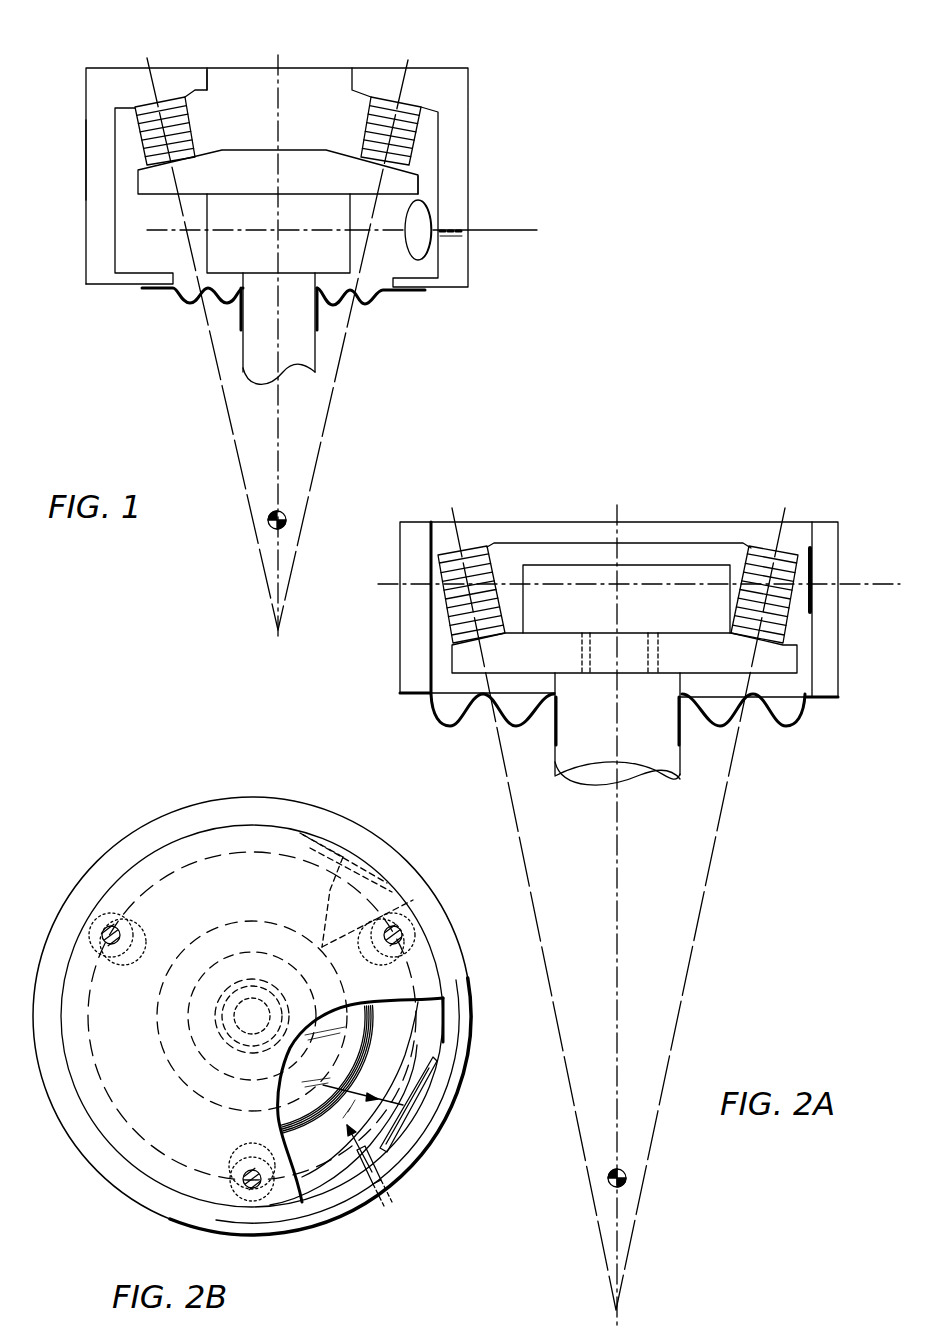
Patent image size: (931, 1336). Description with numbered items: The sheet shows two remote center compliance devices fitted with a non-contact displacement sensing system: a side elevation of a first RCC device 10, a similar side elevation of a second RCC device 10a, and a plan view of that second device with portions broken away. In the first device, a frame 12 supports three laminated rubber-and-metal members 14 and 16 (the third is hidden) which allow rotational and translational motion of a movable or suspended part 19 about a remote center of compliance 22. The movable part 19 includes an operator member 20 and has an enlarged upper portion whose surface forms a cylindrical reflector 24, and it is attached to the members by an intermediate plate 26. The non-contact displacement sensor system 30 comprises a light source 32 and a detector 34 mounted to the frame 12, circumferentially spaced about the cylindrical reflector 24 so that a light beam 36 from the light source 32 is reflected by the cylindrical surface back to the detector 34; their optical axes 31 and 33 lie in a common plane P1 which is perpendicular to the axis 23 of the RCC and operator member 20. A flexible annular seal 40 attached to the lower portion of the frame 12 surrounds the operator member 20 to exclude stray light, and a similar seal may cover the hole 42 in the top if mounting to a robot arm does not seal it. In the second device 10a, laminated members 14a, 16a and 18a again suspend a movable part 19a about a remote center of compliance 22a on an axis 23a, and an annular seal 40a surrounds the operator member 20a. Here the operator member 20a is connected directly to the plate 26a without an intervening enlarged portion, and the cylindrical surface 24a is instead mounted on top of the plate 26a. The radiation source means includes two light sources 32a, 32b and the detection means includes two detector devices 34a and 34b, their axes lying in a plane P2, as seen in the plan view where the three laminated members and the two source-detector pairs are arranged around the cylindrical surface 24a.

In FIG. 1, the RCC device 10 is at (126, 31).
In FIG. 1, the frame 12 is at (96, 207).
In FIG. 1, the member 14 is at (185, 130).
In FIG. 1, the member 16 is at (372, 128).
In FIG. 1, the movable part 19 is at (142, 220).
In FIG. 1, the operator member 20 is at (282, 376).
In FIG. 1, the remote center of compliance 22 is at (287, 518).
In FIG. 1, the axis 23 is at (277, 564).
In FIG. 1, the cylindrical reflector 24 is at (252, 205).
In FIG. 1, the intermediate plate 26 is at (418, 181).
In FIG. 1, the non-contact displacement sensor system 30 is at (427, 300).
In FIG. 1, the optical axis 31 is at (513, 229).
In FIG. 1, the optical axis 33 is at (509, 215).
In FIG. 1, the light source 32 is at (452, 236).
In FIG. 1, the detector 34 is at (432, 207).
In FIG. 1, the light beam 36 is at (393, 232).
In FIG. 1, the flexible annular seal 40 is at (350, 307).
In FIG. 1, the hole 42 is at (207, 72).
In FIG. 1, the plane P1 is at (163, 230).
In FIG. 2A, the remote center compliance device 10a is at (507, 493).
In FIG. 2A, the compliant spring element 14a is at (452, 594).
In FIG. 2B, the compliant spring element 14a is at (102, 923).
In FIG. 2A, the compliant spring element 16a is at (793, 613).
In FIG. 2B, the compliant spring element 16a is at (406, 925).
In FIG. 2B, the compliant spring element 18a is at (268, 1196).
In FIG. 2A, the housing cavity 19a is at (451, 684).
In FIG. 2A, the operator member 20a is at (653, 770).
In FIG. 2B, the operator member 20a is at (217, 1060).
In FIG. 2A, the center of compliance 22a is at (622, 1172).
In FIG. 2A, the device axis 23a is at (618, 928).
In FIG. 2A, the cylindrical surface 24a is at (604, 609).
In FIG. 2B, the cylindrical surface 24a is at (350, 1028).
In FIG. 2A, the plate 26a is at (745, 664).
In FIG. 2B, the plate 26a is at (445, 1046).
In FIG. 2B, the light source 32a is at (385, 1182).
In FIG. 2B, the light source 32b is at (405, 897).
In FIG. 2A, the detector device 34a is at (812, 578).
In FIG. 2B, the detector device 34a is at (405, 1097).
In FIG. 2B, the detector device 34b is at (363, 857).
In FIG. 2A, the bellows 40a is at (450, 723).
In FIG. 2A, the pivot point P2 is at (386, 581).